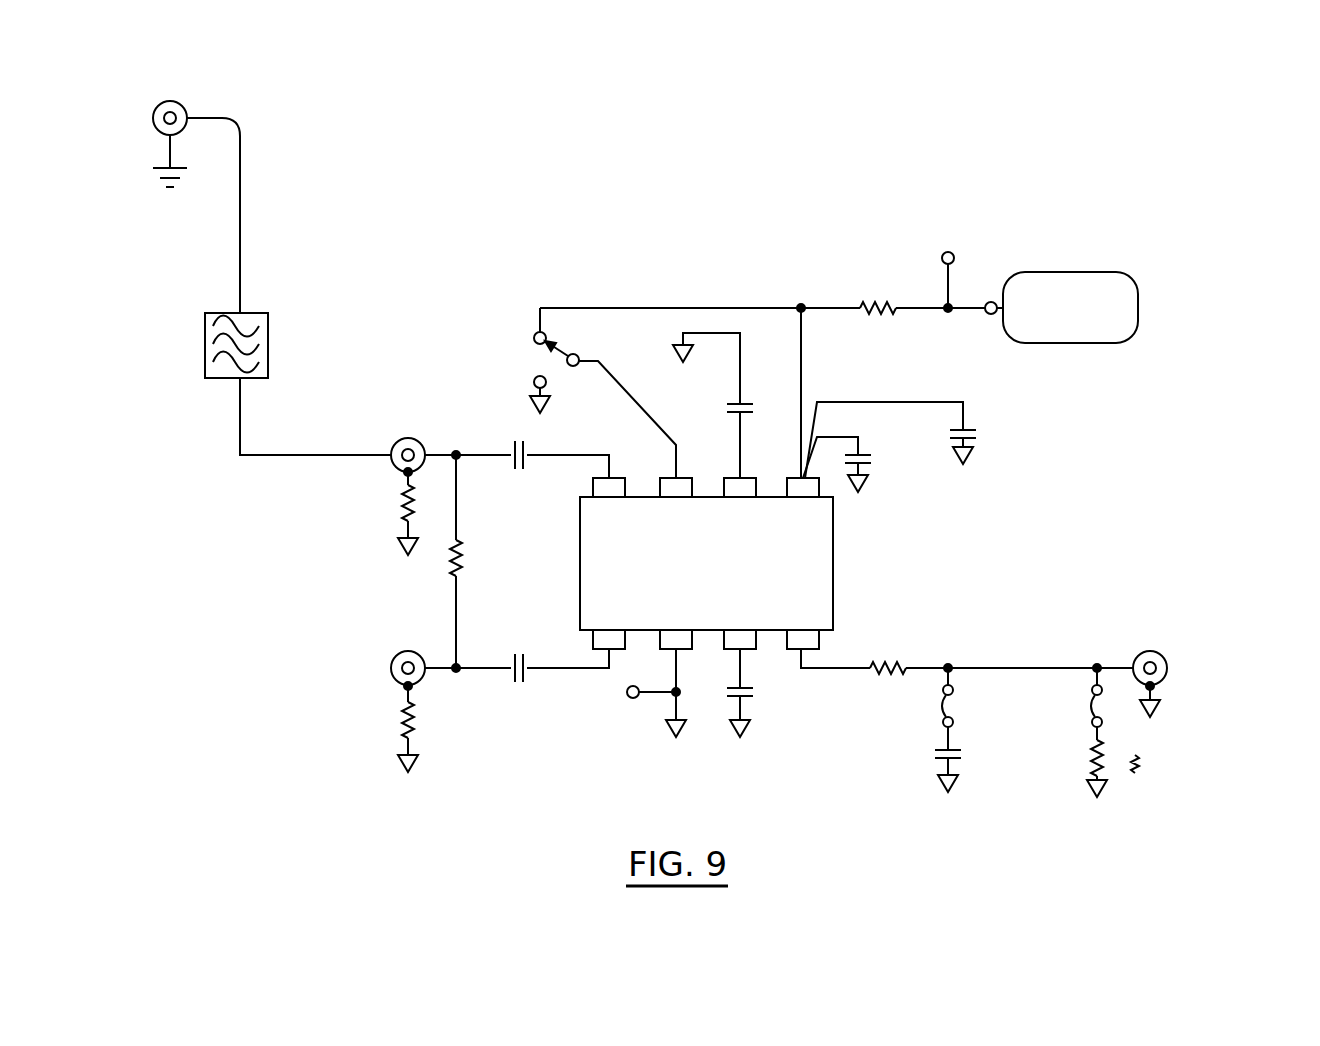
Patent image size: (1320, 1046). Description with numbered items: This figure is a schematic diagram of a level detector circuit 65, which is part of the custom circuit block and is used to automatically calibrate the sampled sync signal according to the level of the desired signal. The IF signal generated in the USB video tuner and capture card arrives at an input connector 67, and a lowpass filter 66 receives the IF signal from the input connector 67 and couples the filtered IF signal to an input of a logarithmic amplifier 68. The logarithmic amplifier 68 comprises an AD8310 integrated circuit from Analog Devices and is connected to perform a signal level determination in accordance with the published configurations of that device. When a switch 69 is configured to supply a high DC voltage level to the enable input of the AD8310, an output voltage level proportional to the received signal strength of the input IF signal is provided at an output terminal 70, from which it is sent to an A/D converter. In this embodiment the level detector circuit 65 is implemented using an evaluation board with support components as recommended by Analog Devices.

The level detector circuit 65 is at (728, 205).
The lowpass filter 66 is at (201, 342).
The input connector 67 is at (170, 100).
The logarithmic amplifier 68 is at (838, 548).
The switch 69 is at (530, 351).
The output terminal 70 is at (1165, 660).